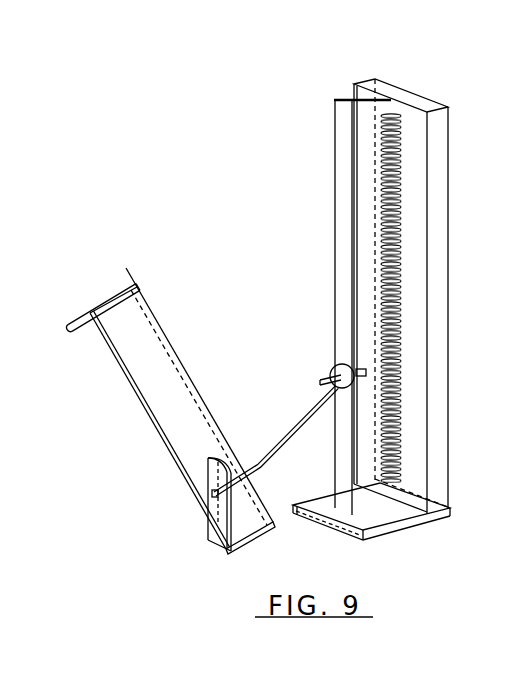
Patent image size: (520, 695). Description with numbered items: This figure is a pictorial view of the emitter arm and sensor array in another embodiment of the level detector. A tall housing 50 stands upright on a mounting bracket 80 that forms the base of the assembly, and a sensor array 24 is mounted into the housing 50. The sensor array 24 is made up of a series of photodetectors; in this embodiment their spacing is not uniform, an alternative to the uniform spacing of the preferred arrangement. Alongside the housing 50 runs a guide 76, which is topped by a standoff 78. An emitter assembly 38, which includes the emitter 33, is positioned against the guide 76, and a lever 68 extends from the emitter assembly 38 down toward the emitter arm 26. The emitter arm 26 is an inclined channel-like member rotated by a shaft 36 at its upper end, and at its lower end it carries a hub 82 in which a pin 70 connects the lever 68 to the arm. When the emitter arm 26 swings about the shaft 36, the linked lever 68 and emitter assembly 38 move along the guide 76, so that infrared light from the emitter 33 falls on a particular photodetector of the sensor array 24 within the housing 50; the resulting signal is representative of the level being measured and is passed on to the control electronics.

The sensor array 24 is at (404, 286).
The emitter arm 26 is at (140, 378).
The emitter 33 is at (367, 373).
The shaft 36 is at (92, 313).
The emitter assembly 38 is at (333, 370).
The housing 50 is at (440, 140).
The lever 68 is at (297, 421).
The pin 70 is at (211, 496).
The guide 76 is at (333, 185).
The standoff 78 is at (348, 100).
The mounting bracket 80 is at (393, 523).
The hub 82 is at (227, 516).